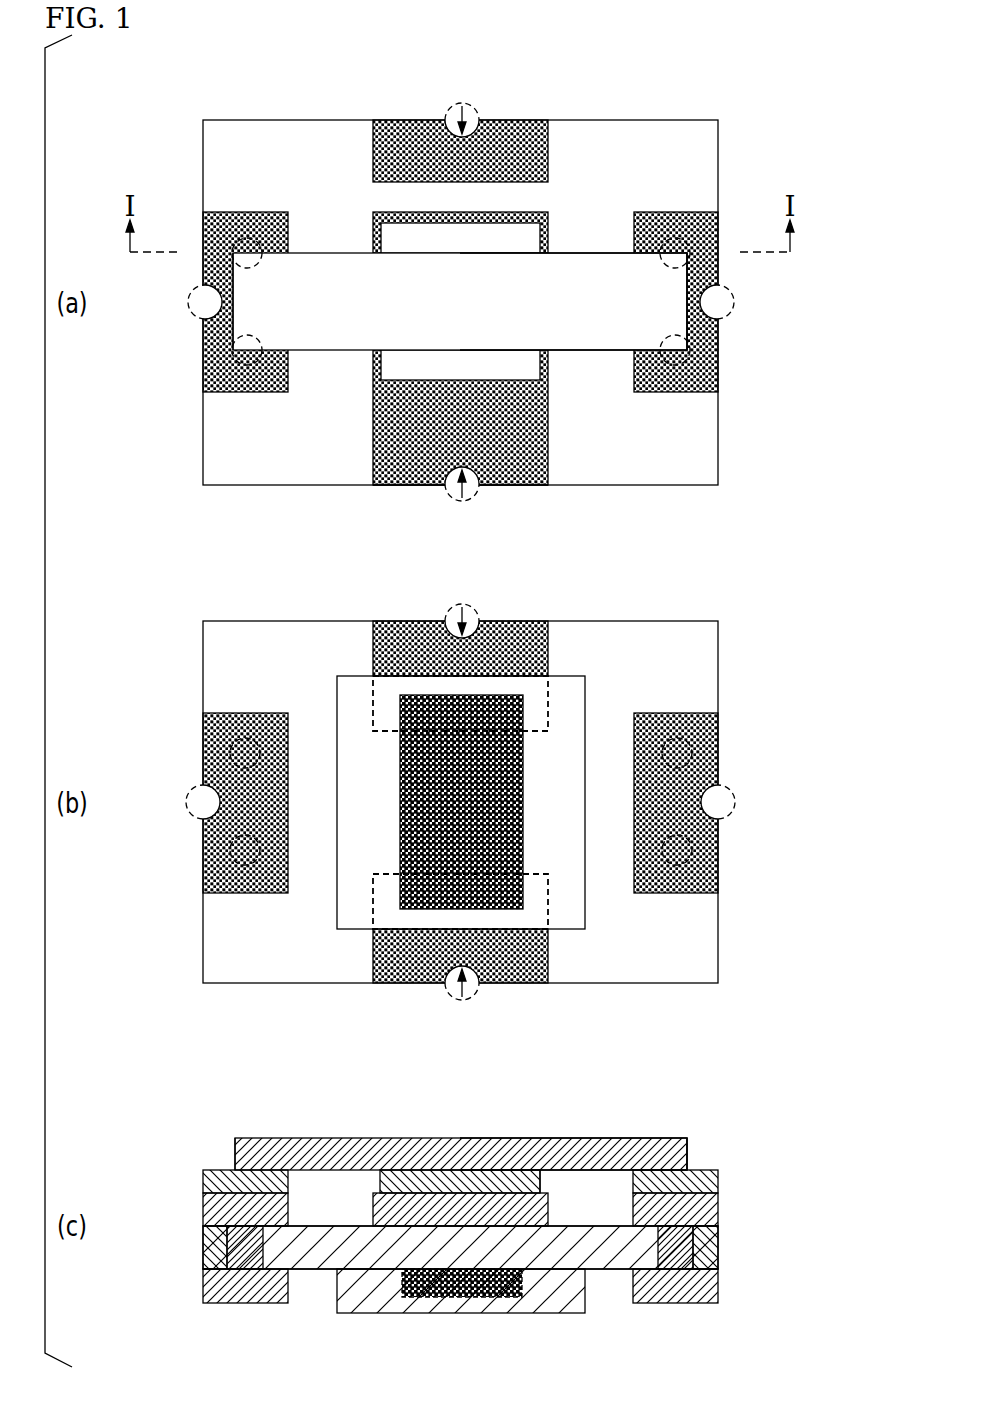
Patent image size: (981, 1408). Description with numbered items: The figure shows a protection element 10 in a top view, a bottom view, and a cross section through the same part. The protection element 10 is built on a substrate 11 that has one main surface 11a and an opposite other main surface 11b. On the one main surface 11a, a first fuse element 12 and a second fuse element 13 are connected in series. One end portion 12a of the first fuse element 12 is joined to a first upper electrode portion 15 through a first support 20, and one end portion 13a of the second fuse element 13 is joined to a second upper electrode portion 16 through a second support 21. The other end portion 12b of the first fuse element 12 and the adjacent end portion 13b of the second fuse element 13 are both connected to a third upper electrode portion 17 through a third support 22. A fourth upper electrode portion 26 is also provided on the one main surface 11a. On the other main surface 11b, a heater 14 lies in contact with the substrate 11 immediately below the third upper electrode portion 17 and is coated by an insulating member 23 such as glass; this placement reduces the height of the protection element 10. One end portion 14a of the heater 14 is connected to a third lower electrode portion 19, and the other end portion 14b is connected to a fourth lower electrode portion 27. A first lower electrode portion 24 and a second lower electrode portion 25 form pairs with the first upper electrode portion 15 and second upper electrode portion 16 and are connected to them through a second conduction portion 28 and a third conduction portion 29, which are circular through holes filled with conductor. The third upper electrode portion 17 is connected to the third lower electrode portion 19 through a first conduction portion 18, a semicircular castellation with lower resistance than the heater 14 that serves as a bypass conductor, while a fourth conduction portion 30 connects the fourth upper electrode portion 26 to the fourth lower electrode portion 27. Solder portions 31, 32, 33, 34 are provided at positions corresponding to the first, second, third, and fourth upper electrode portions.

The protection element 10 is at (750, 78).
The substrate 11 is at (680, 140).
The one main surface 11a is at (597, 1227).
The other main surface 11b is at (597, 1270).
The first fuse element 12 is at (303, 290).
The one end portion of first fuse element 12a is at (257, 307).
The other end portion of first fuse element 12b is at (385, 290).
The second fuse element 13 is at (620, 290).
The one end portion of second fuse element 13a is at (663, 307).
The one end portion of second fuse element 13b is at (535, 290).
The heater 14 is at (505, 800).
The one end portion of heater 14a is at (466, 716).
The other end portion of heater 14b is at (470, 890).
The first upper electrode portion 15 is at (222, 1208).
The second upper electrode portion 16 is at (698, 1213).
The third upper electrode portion 17 is at (527, 468).
The first conduction portion 18 is at (470, 493).
The third lower electrode portion 19 is at (433, 650).
The first support 20 is at (245, 225).
The second support 21 is at (675, 225).
The third support 22 is at (423, 368).
The insulating member 23 is at (355, 930).
The first lower electrode portion 24 is at (250, 808).
The second lower electrode portion 25 is at (695, 777).
The fourth upper electrode portion 26 is at (433, 150).
The fourth lower electrode portion 27 is at (403, 965).
The second conduction portion 28 is at (235, 243).
The third conduction portion 29 is at (687, 243).
The fourth conduction portion 30 is at (468, 128).
The solder portion 31 is at (190, 301).
The solder portion 32 is at (734, 301).
The solder portion 33 is at (450, 497).
The solder portion 34 is at (455, 108).